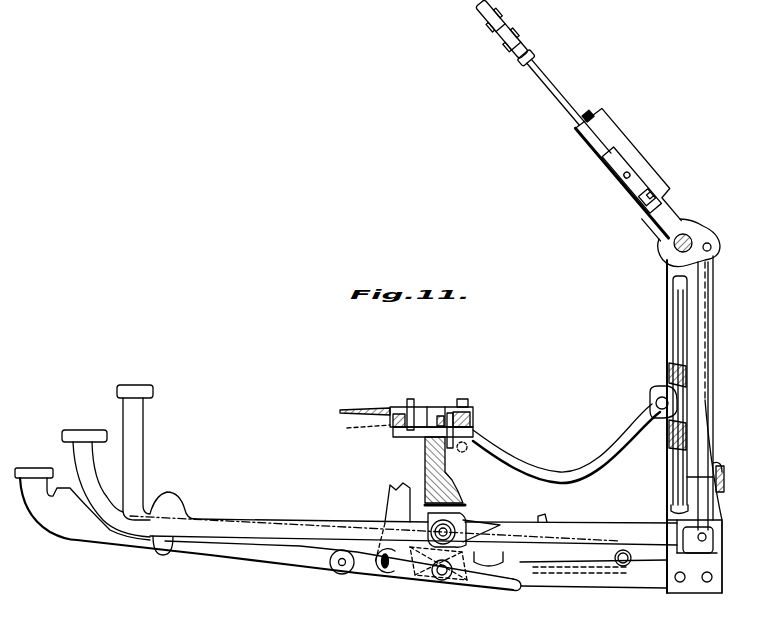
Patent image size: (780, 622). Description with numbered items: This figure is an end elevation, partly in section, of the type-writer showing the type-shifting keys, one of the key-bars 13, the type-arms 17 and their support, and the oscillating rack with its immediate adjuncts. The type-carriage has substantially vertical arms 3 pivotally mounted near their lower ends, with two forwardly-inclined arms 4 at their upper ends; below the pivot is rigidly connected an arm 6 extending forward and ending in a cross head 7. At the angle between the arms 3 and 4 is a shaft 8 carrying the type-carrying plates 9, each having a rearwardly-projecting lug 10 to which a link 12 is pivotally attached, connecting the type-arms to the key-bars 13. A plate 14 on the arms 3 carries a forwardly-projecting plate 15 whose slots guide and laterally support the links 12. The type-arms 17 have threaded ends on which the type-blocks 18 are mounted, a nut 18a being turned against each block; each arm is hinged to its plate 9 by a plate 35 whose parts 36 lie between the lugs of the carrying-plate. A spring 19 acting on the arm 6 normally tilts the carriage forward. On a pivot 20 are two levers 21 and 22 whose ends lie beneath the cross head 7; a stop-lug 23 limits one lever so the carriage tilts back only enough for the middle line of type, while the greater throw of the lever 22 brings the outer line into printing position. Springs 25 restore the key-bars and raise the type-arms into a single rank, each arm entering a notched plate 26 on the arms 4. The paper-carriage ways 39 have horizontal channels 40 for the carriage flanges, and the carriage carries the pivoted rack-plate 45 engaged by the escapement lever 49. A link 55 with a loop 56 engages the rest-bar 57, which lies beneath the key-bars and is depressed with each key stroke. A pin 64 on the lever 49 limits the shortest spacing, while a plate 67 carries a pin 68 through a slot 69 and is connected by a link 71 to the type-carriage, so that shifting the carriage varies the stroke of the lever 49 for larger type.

The vertical arms 3 is at (720, 427).
The forwardly-inclined arms 4 is at (658, 198).
The arm 6 is at (596, 578).
The cross head 7 is at (488, 552).
The shaft 8 is at (690, 236).
The type-carrying plates 9 is at (650, 228).
The rearwardly-projecting lug 10 is at (719, 247).
The link 12 is at (715, 320).
The key-bars 13 is at (620, 522).
The plate 14 is at (724, 485).
The forwardly-projecting plate 15 is at (722, 466).
The type-arms 17 is at (564, 80).
The type-blocks 18 is at (512, 36).
The nut 18a is at (527, 54).
The spring 19 is at (546, 516).
The pivot 20 is at (335, 573).
The lever 21 is at (70, 540).
The lever 22 is at (97, 500).
The stop-lug 23 is at (487, 543).
The springs 25 is at (462, 510).
The notched plate 26 is at (588, 112).
The plate 35 is at (620, 186).
The parts 36 is at (647, 192).
The paper-carriage ways 39 is at (460, 473).
The horizontal channels 40 is at (425, 460).
The rack-plate 45 is at (362, 403).
The escapement lever 49 is at (440, 407).
The link 55 is at (385, 505).
The loop 56 is at (385, 571).
The rest-bar 57 is at (435, 578).
The pin 64 is at (453, 413).
The plate 67 is at (393, 432).
The pin 68 is at (411, 399).
The slot 69 is at (418, 420).
The link 71 is at (552, 460).